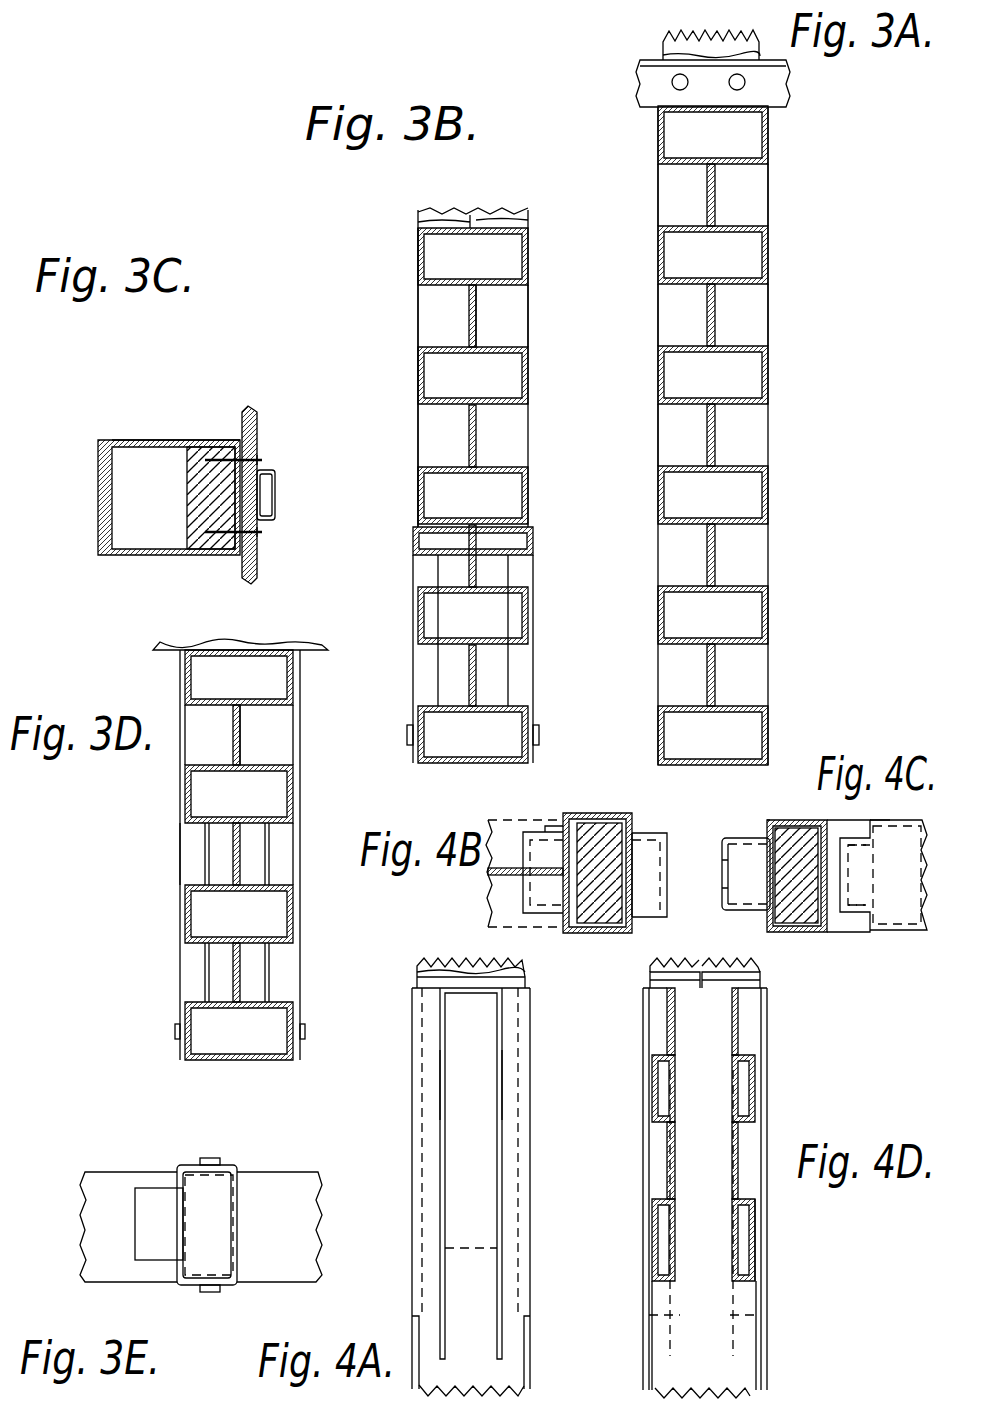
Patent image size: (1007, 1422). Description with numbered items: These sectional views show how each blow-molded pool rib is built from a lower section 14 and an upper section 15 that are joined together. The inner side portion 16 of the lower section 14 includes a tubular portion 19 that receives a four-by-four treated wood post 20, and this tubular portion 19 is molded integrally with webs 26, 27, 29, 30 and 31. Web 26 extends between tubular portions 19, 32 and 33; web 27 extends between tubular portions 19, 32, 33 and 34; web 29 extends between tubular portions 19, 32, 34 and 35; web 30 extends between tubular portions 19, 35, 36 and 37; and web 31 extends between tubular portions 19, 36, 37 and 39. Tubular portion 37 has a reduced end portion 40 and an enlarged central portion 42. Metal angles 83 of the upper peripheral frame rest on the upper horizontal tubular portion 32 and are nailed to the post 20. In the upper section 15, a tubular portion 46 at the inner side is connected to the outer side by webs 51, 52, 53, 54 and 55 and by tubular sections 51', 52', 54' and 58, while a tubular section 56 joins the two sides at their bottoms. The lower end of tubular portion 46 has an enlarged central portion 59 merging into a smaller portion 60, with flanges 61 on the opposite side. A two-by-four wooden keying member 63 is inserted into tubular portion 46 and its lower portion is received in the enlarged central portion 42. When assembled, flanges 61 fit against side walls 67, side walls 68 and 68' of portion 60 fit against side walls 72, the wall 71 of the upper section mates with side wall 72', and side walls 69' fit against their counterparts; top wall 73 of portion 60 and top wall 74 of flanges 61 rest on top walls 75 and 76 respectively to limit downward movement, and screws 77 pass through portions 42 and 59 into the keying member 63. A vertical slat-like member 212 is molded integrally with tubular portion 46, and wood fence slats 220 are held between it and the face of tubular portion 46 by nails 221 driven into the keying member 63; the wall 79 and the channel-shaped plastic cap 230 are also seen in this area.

In FIG. 3A, the lower section 14 is at (768, 170).
In FIG. 3B, the upper section 15 is at (418, 305).
In FIG. 3A, the inner side portion 16 is at (768, 292).
In FIG. 3A, the tubular portion 19 is at (668, 432).
In FIG. 3A, the wood post 20 is at (663, 46).
In FIG. 3A, the web 26 is at (715, 200).
In FIG. 3A, the web 27 is at (715, 312).
In FIG. 3A, the web 29 is at (715, 436).
In FIG. 3D, the web 29 is at (233, 740).
In FIG. 3A, the web 30 is at (715, 560).
In FIG. 3D, the web 30 is at (233, 870).
In FIG. 3A, the web 31 is at (715, 680).
In FIG. 3D, the web 31 is at (233, 960).
In FIG. 3A, the upper horizontal tubular portion 32 is at (768, 136).
In FIG. 3D, the upper horizontal tubular portion 32 is at (300, 680).
In FIG. 4C, the upper horizontal tubular portion 32 is at (910, 940).
In FIG. 3A, the tubular portion 33 is at (768, 250).
In FIG. 3A, the tubular portion 34 is at (768, 372).
In FIG. 3A, the tubular portion 35 is at (768, 500).
In FIG. 3D, the tubular portion 35 is at (300, 795).
In FIG. 3A, the tubular portion 36 is at (768, 614).
In FIG. 3D, the tubular portion 36 is at (300, 918).
In FIG. 3D, the tubular portion 37 is at (275, 737).
In FIG. 3A, the tubular portion 39 is at (768, 732).
In FIG. 3D, the tubular portion 39 is at (235, 1062).
In FIG. 3E, the tubular portion 39 is at (283, 1175).
In FIG. 4C, the tubular portion 39 is at (868, 826).
In FIG. 3D, the reduced end portion 40 is at (258, 858).
In FIG. 4C, the reduced end portion 40 is at (850, 933).
In FIG. 4C, the enlarged central portion 42 is at (800, 933).
In FIG. 3B, the tubular portion 46 is at (513, 300).
In FIG. 3B, the web 51 is at (502, 216).
In FIG. 3B, the tubular section 51' is at (505, 256).
In FIG. 3B, the web 52 is at (524, 316).
In FIG. 3B, the tubular section 52' is at (505, 375).
In FIG. 3B, the web 53 is at (476, 440).
In FIG. 3B, the web 54 is at (501, 556).
In FIG. 4B, the web 54 is at (506, 873).
In FIG. 4D, the web 54 is at (650, 991).
In FIG. 3B, the tubular section 54' is at (505, 495).
In FIG. 3B, the web 55 is at (476, 676).
In FIG. 3B, the tubular section 56 is at (465, 765).
In FIG. 3E, the tubular section 56 is at (95, 1215).
In FIG. 4D, the tubular section 56 is at (755, 1222).
In FIG. 3B, the tubular section 58 is at (528, 620).
In FIG. 3D, the enlarged central portion 59 is at (180, 834).
In FIG. 4B, the enlarged central portion 59 is at (602, 813).
In FIG. 4A, the enlarged central portion 59 is at (530, 1020).
In FIG. 4B, the smaller portion 60 is at (552, 820).
In FIG. 3D, the flanges 61 is at (205, 852).
In FIG. 4B, the flanges 61 is at (640, 820).
In FIG. 4A, the flanges 61 is at (440, 1104).
In FIG. 4D, the flanges 61 is at (667, 1256).
In FIG. 3C, the keying member 63 is at (190, 496).
In FIG. 3E, the keying member 63 is at (235, 1222).
In FIG. 4B, the keying member 63 is at (598, 900).
In FIG. 4C, the keying member 63 is at (794, 832).
In FIG. 4A, the keying member 63 is at (417, 966).
In FIG. 4D, the keying member 63 is at (700, 972).
In FIG. 4C, the side walls 67 is at (866, 850).
In FIG. 4B, the side wall 68 is at (531, 877).
In FIG. 4D, the side wall 68 is at (713, 1070).
In FIG. 4D, the side wall 68' is at (706, 1196).
In FIG. 4A, the side walls 69' is at (474, 1152).
In FIG. 3E, the coupling member 71 is at (150, 1188).
In FIG. 4C, the coupling member 71 is at (768, 822).
In FIG. 4C, the side walls 72 is at (726, 877).
In FIG. 4C, the side wall 72' is at (704, 864).
In FIG. 4B, the top wall 73 is at (535, 866).
In FIG. 4D, the top wall 73 is at (706, 1002).
In FIG. 4B, the top wall 74 is at (658, 880).
In FIG. 4A, the top wall 74 is at (466, 996).
In FIG. 4C, the top wall 75 is at (735, 884).
In FIG. 4C, the top wall 76 is at (860, 875).
In FIG. 4D, the top wall 76 is at (762, 988).
In FIG. 3B, the screws 77 is at (407, 735).
In FIG. 3E, the screws 77 is at (210, 1158).
In FIG. 3C, the cover 79 is at (165, 440).
In FIG. 3A, the angles 83 is at (790, 80).
In FIG. 3D, the angles 83 is at (160, 648).
In FIG. 3C, the slat-like member 212 is at (275, 493).
In FIG. 3C, the wood slats 220 is at (260, 420).
In FIG. 3C, the nails 221 is at (262, 458).
In FIG. 3C, the plastic cap 230 is at (98, 490).